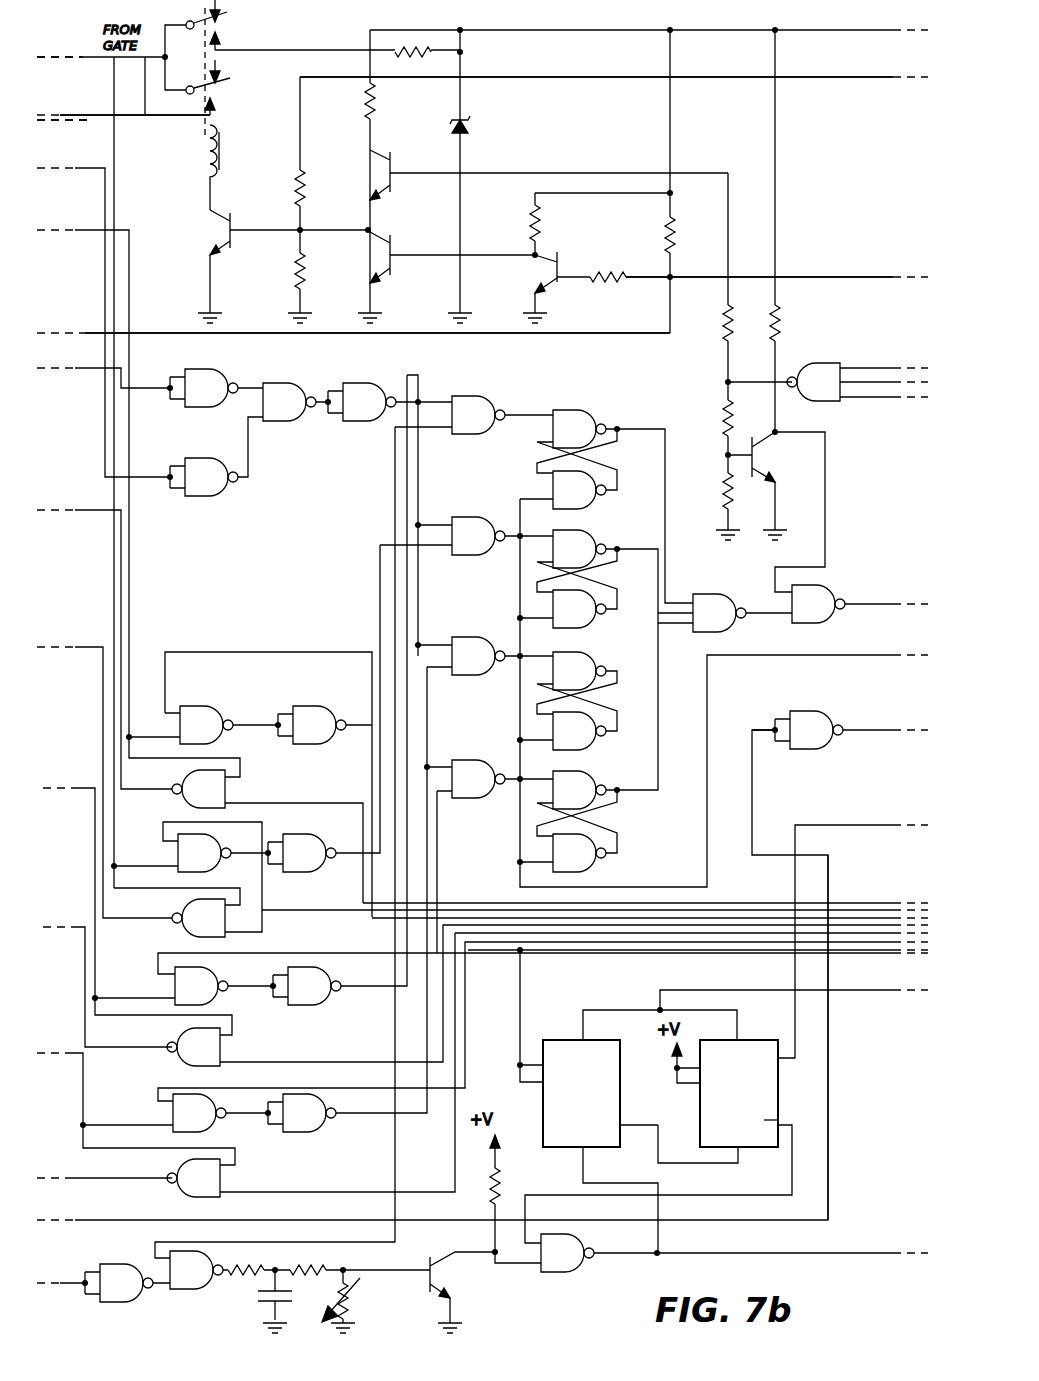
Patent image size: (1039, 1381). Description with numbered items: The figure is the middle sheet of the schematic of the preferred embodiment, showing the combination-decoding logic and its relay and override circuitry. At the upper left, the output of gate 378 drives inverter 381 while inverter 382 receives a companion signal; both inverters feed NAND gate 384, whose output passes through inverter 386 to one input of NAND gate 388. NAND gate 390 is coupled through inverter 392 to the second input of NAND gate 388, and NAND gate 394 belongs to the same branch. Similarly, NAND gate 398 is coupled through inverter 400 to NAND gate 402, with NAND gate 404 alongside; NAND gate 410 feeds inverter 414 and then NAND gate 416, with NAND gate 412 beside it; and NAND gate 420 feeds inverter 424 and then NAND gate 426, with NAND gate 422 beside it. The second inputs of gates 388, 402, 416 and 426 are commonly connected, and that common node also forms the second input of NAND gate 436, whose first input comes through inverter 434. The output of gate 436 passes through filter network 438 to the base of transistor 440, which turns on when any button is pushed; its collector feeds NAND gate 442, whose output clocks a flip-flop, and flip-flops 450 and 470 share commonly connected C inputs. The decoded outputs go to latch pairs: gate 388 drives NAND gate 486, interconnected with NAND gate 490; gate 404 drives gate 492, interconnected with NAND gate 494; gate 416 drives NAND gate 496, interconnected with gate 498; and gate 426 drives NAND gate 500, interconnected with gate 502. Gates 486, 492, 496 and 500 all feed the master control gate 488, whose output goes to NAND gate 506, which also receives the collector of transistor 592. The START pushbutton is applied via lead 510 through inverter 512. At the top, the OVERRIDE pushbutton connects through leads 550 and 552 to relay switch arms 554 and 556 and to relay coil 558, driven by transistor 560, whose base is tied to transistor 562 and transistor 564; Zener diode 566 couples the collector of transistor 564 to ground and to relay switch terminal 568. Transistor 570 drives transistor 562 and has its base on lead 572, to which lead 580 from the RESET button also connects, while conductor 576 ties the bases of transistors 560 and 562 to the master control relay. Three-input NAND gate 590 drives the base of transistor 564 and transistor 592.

The gate 378 is at (85, 55).
The lead 550 is at (90, 113).
The lead 552 is at (90, 123).
The relay switch arm 554 is at (228, 20).
The relay switch arm 556 is at (228, 88).
The relay coil 558 is at (220, 142).
The transistor 560 is at (222, 213).
The transistor 562 is at (378, 243).
The transistor 564 is at (382, 155).
The Zener diode 566 is at (468, 133).
The relay switch terminal 568 is at (222, 48).
The transistor 570 is at (545, 257).
The lead 572 is at (805, 278).
The conductor 576 is at (627, 83).
The lead 580 is at (147, 333).
The NAND gate 590 is at (820, 363).
The transistor 592 is at (766, 447).
The inverter 381 is at (210, 378).
The inverter 382 is at (208, 485).
The NAND gate 384 is at (288, 392).
The inverter 386 is at (370, 392).
The NAND gate 388 is at (470, 400).
The NAND gate 390 is at (212, 715).
The inverter 392 is at (305, 715).
The NAND gate 394 is at (172, 796).
The NAND gate 398 is at (172, 860).
The inverter 400 is at (312, 845).
The NAND gate 402 is at (470, 522).
The NAND gate 404 is at (170, 925).
The NAND gate 410 is at (210, 995).
The NAND gate 412 is at (225, 1047).
The inverter 414 is at (322, 1005).
The NAND gate 416 is at (465, 648).
The NAND gate 420 is at (205, 1125).
The NAND gate 422 is at (225, 1178).
The inverter 424 is at (315, 1125).
The NAND gate 426 is at (462, 768).
The inverter 434 is at (118, 1272).
The NAND gate 436 is at (198, 1290).
The filter network 438 is at (342, 1281).
The transistor 440 is at (455, 1265).
The NAND gate 442 is at (572, 1275).
The flip-flop 450 is at (568, 1038).
The fourth flip-flop circuit 470 is at (752, 1040).
The NAND gate 486 is at (578, 421).
The master control gate 488 is at (712, 600).
The NAND gate 490 is at (590, 500).
The gate 492 is at (588, 547).
The NAND gate 494 is at (590, 625).
The NAND gate 496 is at (590, 670).
The gate 498 is at (590, 745).
The NAND gate 500 is at (588, 787).
The gate 502 is at (585, 868).
The NAND gate 506 is at (830, 597).
The lead 510 is at (830, 1080).
The inverter 512 is at (808, 748).